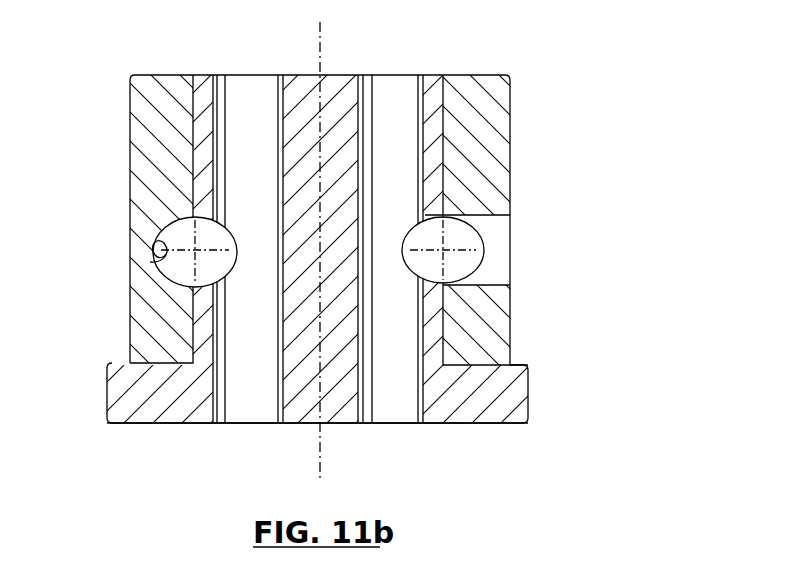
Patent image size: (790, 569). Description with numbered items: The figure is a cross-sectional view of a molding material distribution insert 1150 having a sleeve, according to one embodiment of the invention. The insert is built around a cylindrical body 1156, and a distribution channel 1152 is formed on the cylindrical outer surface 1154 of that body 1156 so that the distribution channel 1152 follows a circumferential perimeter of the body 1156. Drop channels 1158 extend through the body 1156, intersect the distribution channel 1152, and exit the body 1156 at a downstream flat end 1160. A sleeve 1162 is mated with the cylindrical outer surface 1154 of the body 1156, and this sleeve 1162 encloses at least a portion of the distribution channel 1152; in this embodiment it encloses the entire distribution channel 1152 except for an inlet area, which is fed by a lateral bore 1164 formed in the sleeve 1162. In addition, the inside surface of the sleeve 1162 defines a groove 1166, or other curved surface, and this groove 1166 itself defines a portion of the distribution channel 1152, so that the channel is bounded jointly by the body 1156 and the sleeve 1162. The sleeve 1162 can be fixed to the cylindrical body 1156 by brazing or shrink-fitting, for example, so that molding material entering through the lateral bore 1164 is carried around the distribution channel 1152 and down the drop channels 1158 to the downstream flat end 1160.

The bearing assembly 1150 is at (652, 146).
The distribution channel 1152 is at (194, 248).
The cylindrical outer surface 1154 is at (130, 326).
The cylindrical body 1156 is at (324, 73).
The drop channels 1158 is at (391, 425).
The downstream flat end 1160 is at (163, 425).
The sleeve 1162 is at (510, 334).
The lateral bore 1164 is at (489, 245).
The groove 1166 is at (150, 262).